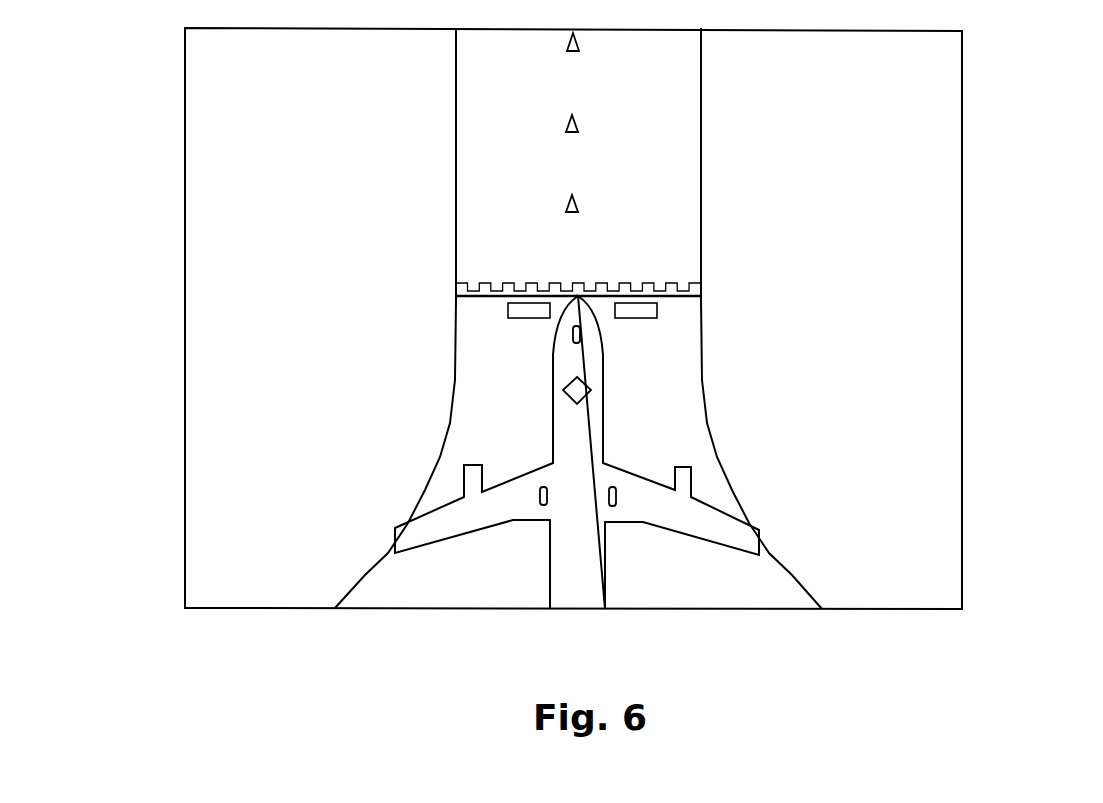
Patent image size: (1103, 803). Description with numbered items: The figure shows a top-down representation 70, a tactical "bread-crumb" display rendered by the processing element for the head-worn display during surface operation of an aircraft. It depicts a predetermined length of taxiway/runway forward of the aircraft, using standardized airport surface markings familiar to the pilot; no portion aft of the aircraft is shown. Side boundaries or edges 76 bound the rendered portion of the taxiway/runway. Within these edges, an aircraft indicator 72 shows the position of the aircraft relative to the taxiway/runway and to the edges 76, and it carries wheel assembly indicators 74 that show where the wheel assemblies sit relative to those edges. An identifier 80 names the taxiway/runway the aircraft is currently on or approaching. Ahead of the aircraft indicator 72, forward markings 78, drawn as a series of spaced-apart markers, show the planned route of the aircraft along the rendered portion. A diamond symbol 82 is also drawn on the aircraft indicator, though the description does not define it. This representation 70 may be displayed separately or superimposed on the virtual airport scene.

The top-down representation 70 is at (980, 75).
The aircraft indicator 72 is at (603, 408).
The wheel assembly indicators 74 is at (572, 336).
The side boundaries or edges 76 is at (456, 215).
The forward markings 78 is at (578, 121).
The identifier 80 is at (508, 308).
The aim point symbol 82 is at (563, 391).